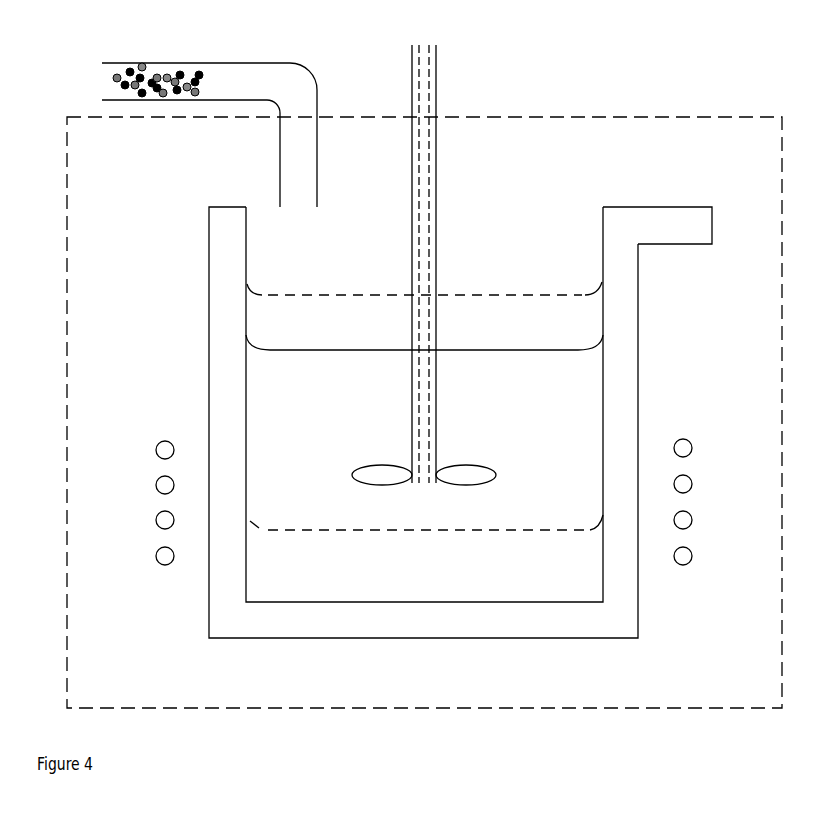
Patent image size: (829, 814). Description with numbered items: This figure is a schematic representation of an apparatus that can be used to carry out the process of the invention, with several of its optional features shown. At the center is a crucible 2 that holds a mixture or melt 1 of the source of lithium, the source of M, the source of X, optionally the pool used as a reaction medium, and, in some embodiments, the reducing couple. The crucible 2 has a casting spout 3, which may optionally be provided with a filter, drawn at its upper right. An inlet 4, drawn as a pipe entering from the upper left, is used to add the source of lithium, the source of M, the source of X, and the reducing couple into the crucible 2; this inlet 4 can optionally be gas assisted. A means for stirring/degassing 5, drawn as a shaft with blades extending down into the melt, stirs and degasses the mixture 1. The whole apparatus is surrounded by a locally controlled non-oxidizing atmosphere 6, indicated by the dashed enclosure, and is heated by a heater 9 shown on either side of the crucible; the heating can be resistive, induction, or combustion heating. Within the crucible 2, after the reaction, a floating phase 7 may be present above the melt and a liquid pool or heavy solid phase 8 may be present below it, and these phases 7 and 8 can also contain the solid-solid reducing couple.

The mixture or melt 1 is at (424, 404).
The crucible 2 is at (427, 422).
The casting spout 3 is at (657, 225).
The inlet 4 is at (212, 135).
The means for stirring/degassing 5 is at (424, 265).
The locally controlled non-oxidizing atmosphere 6 is at (424, 412).
The floating phase 7 is at (424, 316).
The liquid pool or heavy solid phase 8 is at (426, 553).
The heater 9 is at (424, 527).